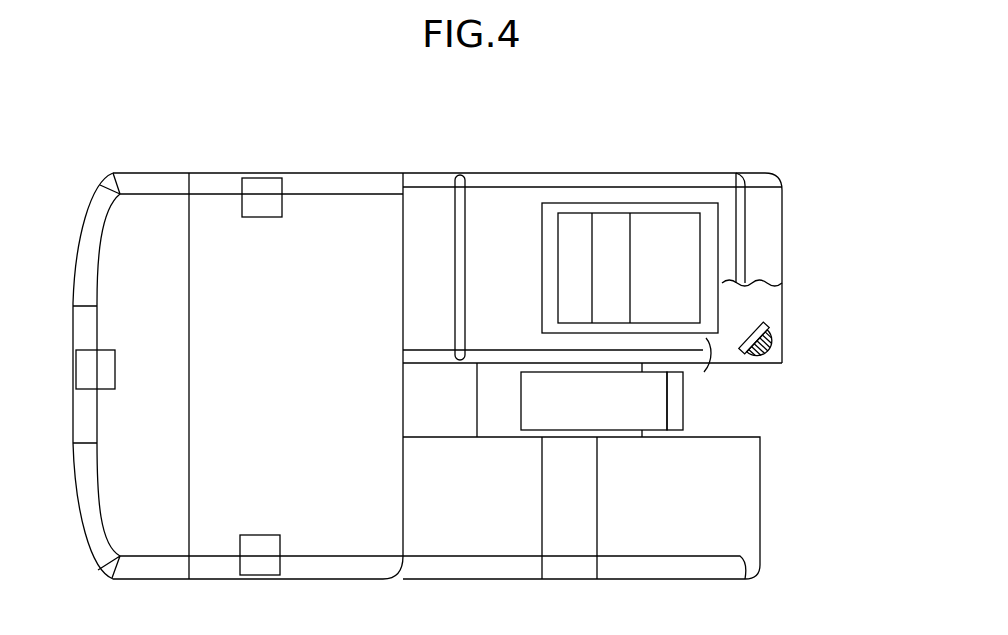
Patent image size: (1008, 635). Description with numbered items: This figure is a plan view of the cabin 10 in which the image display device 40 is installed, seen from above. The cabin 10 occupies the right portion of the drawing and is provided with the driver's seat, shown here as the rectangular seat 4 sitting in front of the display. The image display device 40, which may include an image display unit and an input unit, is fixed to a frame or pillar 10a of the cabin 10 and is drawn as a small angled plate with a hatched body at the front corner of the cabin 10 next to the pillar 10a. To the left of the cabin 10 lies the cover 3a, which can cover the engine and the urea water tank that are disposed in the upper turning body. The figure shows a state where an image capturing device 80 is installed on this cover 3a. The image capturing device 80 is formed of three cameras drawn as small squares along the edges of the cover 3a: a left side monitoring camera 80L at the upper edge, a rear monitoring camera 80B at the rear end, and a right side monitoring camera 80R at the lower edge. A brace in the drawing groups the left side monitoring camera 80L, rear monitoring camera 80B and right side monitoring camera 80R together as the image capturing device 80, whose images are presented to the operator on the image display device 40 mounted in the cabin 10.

The cover 3a is at (337, 210).
The cabin 10 is at (492, 173).
The frame (pillar) 10a is at (782, 360).
The image display device 40 is at (768, 323).
The seat 4 is at (655, 400).
The image capturing device 80 is at (234, 376).
The left side monitoring camera 80L is at (260, 217).
The rear monitoring camera 80B is at (115, 368).
The right side monitoring camera 80R is at (260, 535).